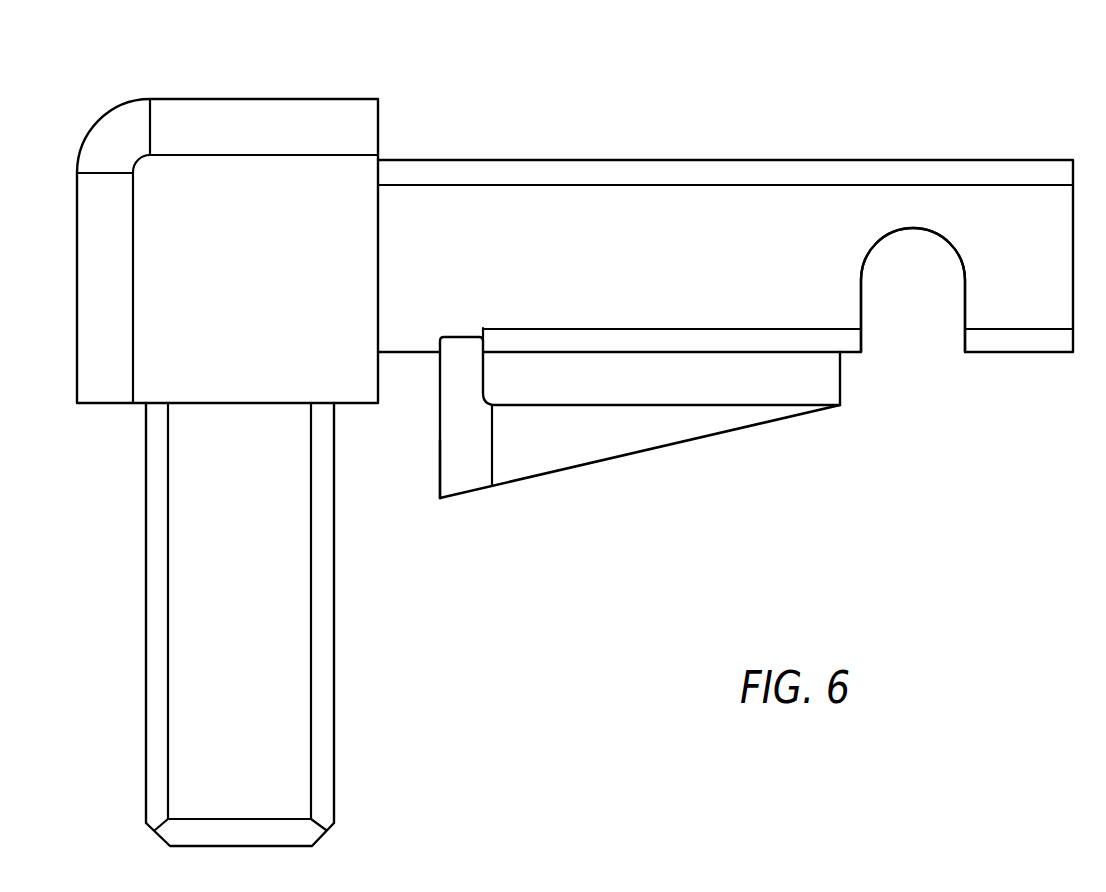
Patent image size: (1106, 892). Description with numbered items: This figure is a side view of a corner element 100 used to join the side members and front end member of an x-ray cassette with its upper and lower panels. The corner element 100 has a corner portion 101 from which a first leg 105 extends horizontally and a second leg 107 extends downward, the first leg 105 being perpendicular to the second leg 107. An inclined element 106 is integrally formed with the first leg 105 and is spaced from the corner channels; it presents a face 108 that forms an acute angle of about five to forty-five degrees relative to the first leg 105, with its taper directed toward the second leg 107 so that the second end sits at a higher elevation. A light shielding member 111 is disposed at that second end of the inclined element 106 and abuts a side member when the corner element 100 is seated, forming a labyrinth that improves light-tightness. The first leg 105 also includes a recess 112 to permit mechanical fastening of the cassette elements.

The corner element 100 is at (883, 120).
The corner portion 101 is at (301, 173).
The first leg 105 is at (578, 215).
The inclined element 106 is at (462, 475).
The second leg 107 is at (195, 617).
The face 108 is at (633, 455).
The light shielding member 111 is at (440, 433).
The recess 112 is at (925, 297).